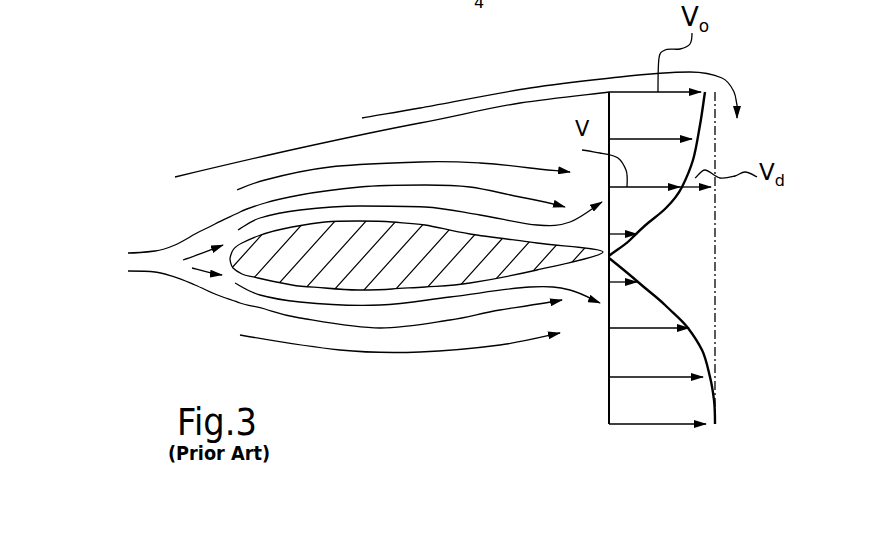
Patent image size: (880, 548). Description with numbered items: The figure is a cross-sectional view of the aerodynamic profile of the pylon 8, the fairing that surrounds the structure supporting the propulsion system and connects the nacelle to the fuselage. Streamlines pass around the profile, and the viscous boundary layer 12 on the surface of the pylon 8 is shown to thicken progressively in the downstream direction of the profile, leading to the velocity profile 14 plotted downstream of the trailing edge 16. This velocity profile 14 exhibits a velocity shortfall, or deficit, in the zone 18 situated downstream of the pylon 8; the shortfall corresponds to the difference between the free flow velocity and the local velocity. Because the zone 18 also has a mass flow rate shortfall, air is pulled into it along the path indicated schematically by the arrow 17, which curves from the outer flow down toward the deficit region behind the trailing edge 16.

The pylon 8 is at (247, 262).
The boundary layer 12 is at (502, 286).
The velocity profile 14 is at (644, 433).
The trailing edge 16 is at (610, 257).
The arrow 17 is at (738, 82).
The zone 18 is at (690, 283).